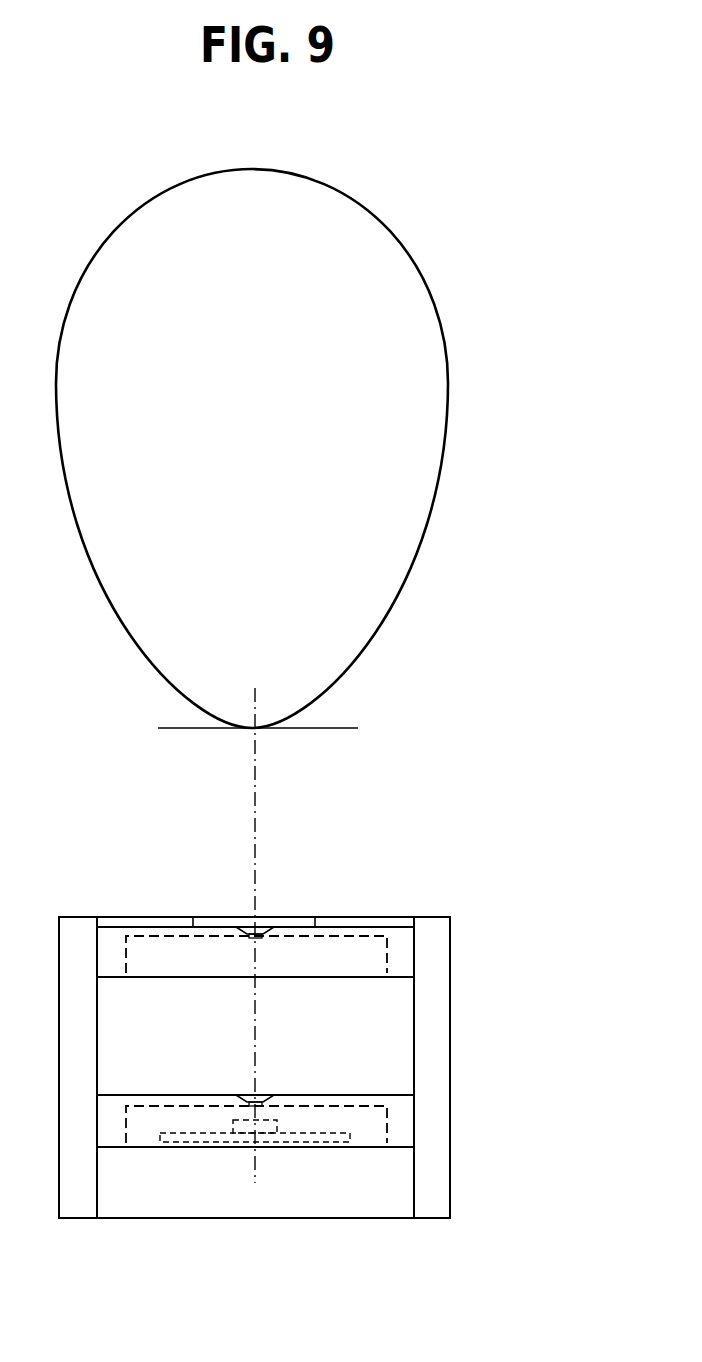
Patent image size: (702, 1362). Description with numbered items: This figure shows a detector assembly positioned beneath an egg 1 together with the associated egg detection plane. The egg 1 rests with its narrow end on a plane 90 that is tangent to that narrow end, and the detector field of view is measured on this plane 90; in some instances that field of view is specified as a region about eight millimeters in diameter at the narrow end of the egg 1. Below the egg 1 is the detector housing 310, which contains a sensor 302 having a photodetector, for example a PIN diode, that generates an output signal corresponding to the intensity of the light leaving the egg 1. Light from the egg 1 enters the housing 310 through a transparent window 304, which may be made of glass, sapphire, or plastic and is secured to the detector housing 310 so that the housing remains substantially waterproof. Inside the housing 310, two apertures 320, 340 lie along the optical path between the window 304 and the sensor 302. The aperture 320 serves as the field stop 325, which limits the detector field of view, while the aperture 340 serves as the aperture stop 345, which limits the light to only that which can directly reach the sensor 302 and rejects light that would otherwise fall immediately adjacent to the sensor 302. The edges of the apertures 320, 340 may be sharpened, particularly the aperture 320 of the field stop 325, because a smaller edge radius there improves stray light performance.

The egg 1 is at (393, 305).
The plane 90 is at (330, 728).
The sensor 302 is at (230, 1120).
The transparent window 304 is at (292, 920).
The detector housing 310 is at (450, 1042).
The aperture 320 is at (247, 925).
The field stop 325 is at (400, 960).
The aperture 340 is at (252, 1095).
The aperture stop 345 is at (400, 1128).